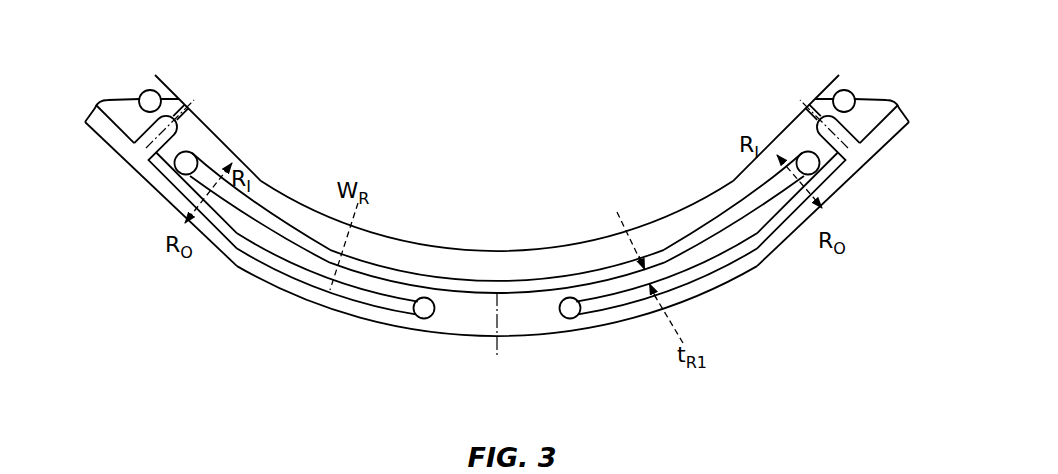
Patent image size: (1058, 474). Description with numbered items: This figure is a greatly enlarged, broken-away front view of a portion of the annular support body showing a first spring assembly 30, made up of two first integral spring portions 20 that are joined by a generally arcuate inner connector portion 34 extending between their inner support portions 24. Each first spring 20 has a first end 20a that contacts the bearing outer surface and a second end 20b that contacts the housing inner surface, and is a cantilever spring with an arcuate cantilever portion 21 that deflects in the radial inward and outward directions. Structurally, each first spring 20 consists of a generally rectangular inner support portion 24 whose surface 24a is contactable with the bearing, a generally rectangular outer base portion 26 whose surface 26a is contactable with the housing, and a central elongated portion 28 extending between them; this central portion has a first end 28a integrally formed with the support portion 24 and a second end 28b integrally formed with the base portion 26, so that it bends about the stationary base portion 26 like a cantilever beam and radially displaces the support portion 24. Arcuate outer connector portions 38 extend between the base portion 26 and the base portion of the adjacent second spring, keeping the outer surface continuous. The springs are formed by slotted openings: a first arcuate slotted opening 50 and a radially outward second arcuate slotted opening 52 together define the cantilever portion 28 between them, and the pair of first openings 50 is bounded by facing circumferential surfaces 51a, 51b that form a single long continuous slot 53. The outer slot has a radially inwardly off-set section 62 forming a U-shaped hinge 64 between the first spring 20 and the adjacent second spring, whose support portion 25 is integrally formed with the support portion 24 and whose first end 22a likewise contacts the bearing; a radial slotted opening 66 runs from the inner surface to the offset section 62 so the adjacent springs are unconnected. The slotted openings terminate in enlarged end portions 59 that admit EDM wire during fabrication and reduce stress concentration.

The first integral spring portion 20 is at (500, 214).
The first end 20a is at (811, 140).
The second end 20b is at (450, 342).
The cantilever portion 21 is at (349, 258).
The first end 22a is at (491, 139).
The inner support portion 24 is at (193, 134).
The surface 24a is at (196, 112).
The inner support portion 25 is at (173, 99).
The outer base portion 26 is at (498, 354).
The surface 26a is at (486, 336).
The central elongated portion 28 is at (250, 238).
The first end 28a is at (151, 172).
The second end 28b is at (436, 292).
The first spring assembly 30 is at (523, 129).
The inner connector portion 34 is at (289, 191).
The outer connector portion 38 is at (258, 277).
The first arcuate slotted opening 50 is at (497, 211).
The circumferential surface 51a is at (588, 278).
The circumferential surface 51b is at (615, 266).
The second arcuate slotted opening 52 is at (493, 284).
The continuous slot 53 is at (563, 278).
The enlarged end portion 59 is at (148, 101).
The radially inwardly off-set section 62 is at (189, 138).
The U-shaped hinge 64 is at (137, 154).
The radial slotted opening 66 is at (820, 112).